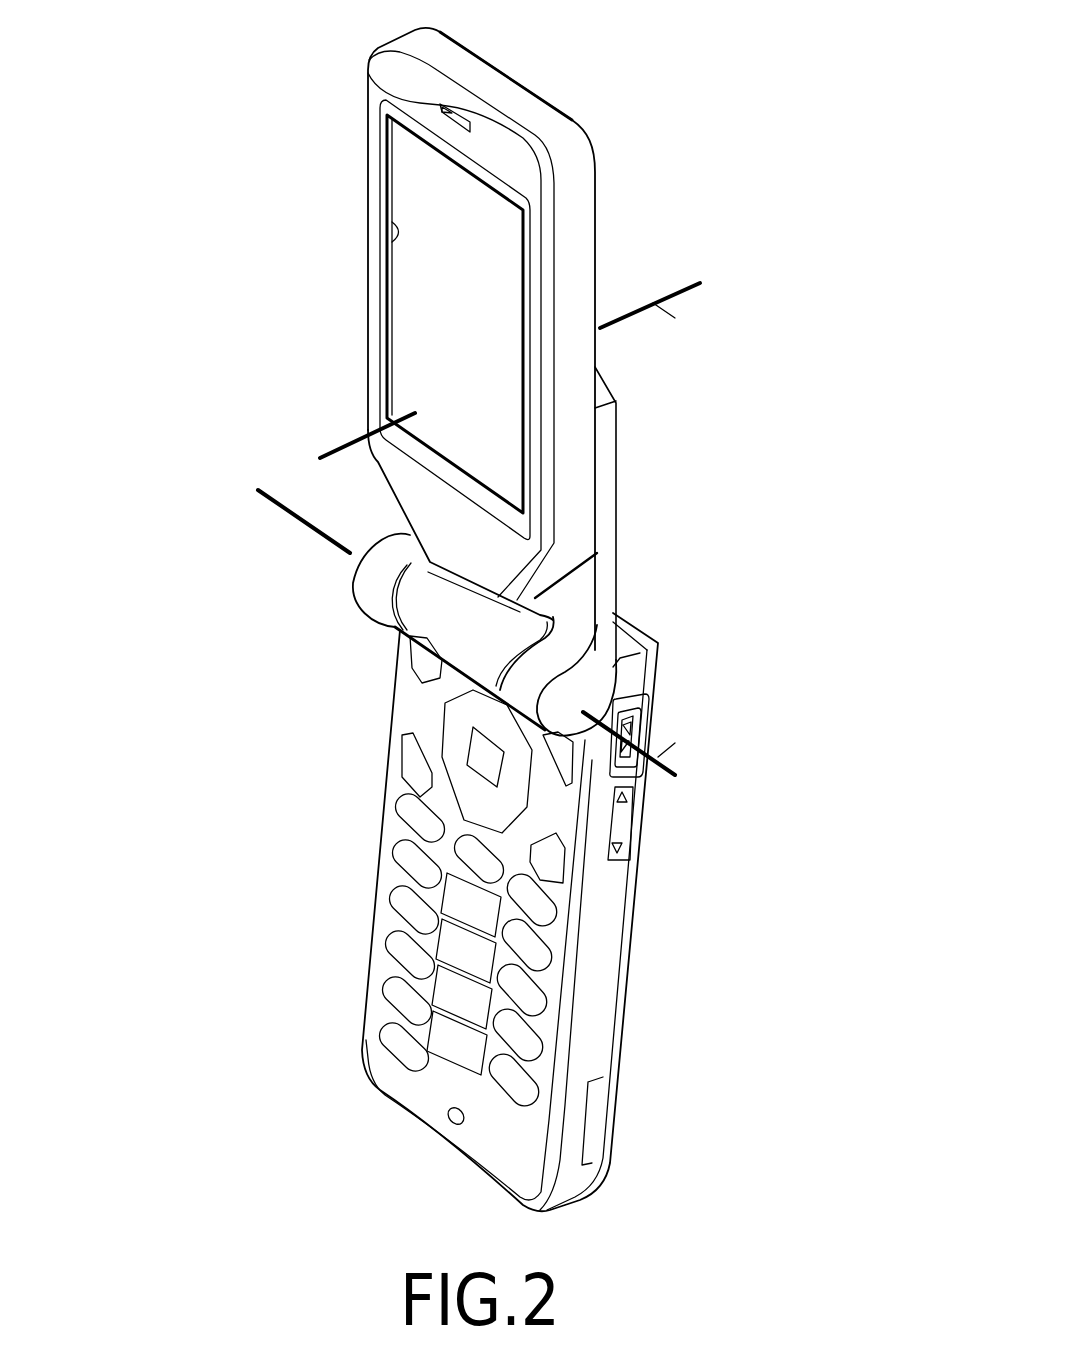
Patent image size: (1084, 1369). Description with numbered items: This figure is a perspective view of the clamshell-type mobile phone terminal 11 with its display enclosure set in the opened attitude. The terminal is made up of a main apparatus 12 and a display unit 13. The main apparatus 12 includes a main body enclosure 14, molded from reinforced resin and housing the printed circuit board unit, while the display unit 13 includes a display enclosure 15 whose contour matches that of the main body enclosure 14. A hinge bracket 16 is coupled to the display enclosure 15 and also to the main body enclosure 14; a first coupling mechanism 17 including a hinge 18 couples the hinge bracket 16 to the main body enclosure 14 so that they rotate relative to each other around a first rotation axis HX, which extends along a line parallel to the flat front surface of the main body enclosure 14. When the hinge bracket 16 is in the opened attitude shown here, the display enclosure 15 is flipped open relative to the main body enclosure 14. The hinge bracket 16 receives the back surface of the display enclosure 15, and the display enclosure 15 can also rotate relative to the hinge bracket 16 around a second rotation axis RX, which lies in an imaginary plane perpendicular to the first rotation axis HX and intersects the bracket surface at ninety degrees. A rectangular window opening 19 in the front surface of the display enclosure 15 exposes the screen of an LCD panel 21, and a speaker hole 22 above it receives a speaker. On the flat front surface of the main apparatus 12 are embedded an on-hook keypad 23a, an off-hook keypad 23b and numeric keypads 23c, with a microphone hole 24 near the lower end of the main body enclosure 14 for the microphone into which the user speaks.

The mobile phone terminal 11 is at (635, 81).
The main apparatus 12 is at (390, 747).
The display unit 13 is at (372, 124).
The main body enclosure 14 is at (608, 1018).
The display enclosure 15 is at (585, 235).
The hinge bracket 16 is at (610, 553).
The first coupling mechanism 17 is at (420, 637).
The hinge 18 is at (403, 593).
The window opening 19 is at (405, 237).
The LCD panel 21 is at (408, 311).
The speaker hole 22 is at (440, 104).
The on-hook keypad 23a is at (407, 813).
The off-hook keypad 23b is at (547, 908).
The numeric keypads 23c is at (400, 903).
The microphone hole 24 is at (452, 1117).
The second rotation axis RX is at (494, 418).
The first rotation axis HX is at (654, 777).